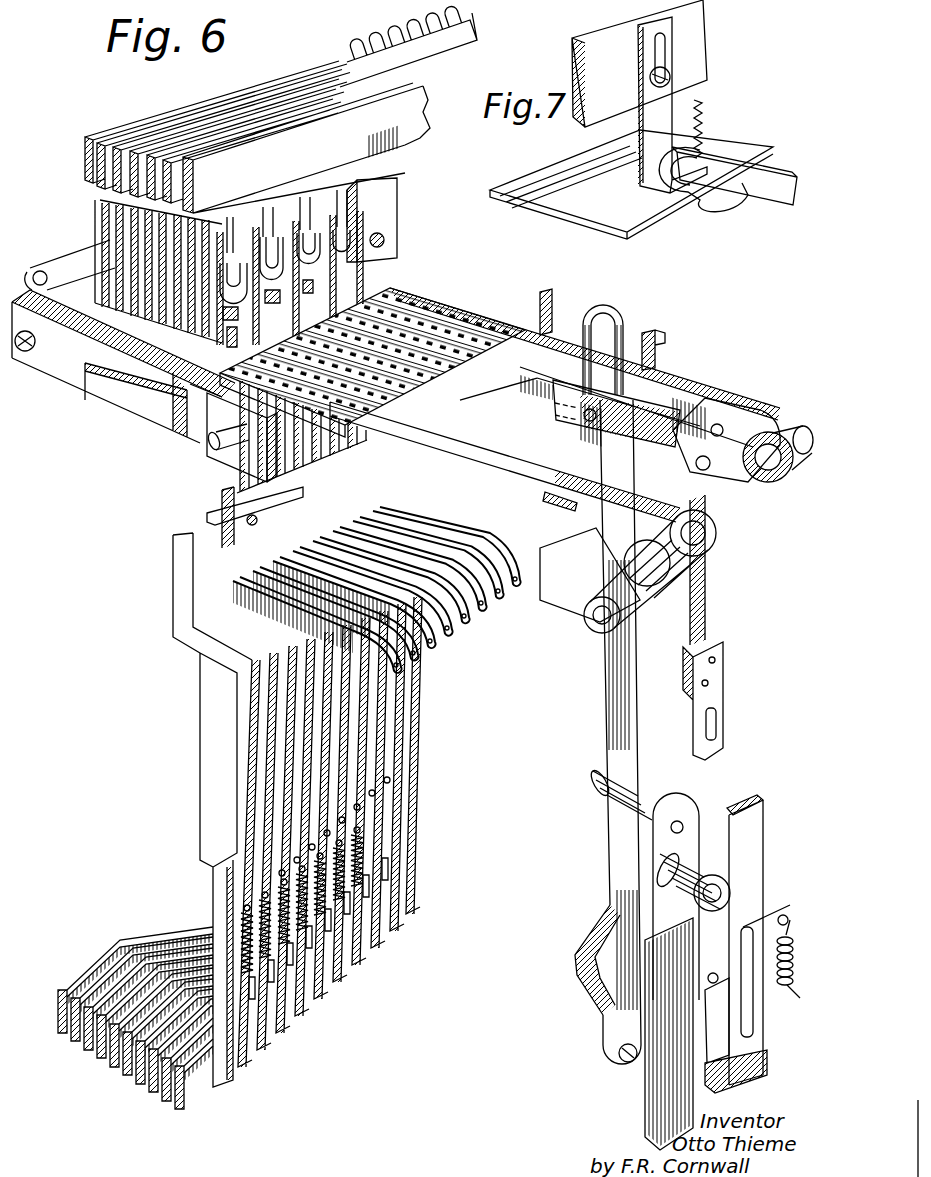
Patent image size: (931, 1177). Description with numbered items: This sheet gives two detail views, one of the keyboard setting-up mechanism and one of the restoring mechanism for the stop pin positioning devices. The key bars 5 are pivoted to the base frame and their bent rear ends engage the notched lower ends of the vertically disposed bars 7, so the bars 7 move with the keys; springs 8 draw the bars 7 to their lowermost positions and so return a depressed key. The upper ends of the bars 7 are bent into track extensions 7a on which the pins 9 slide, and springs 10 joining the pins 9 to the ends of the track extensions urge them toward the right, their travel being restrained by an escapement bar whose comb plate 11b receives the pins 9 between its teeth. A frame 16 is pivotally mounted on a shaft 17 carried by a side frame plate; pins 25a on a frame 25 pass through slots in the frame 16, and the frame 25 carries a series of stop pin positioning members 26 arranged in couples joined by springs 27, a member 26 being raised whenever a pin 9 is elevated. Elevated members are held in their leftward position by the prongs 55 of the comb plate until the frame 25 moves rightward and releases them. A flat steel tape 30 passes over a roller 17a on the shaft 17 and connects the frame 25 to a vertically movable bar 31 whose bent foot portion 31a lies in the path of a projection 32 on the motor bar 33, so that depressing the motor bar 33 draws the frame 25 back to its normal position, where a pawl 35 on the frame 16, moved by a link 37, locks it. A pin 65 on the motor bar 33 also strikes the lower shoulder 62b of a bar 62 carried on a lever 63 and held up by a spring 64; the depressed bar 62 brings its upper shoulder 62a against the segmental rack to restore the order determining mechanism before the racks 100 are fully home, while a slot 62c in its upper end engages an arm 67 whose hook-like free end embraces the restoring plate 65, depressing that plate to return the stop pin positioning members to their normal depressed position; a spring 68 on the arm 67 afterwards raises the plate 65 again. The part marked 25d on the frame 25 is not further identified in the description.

In FIG. 6, the key bars 5 is at (170, 1103).
In FIG. 6, the vertically disposed bars 7 is at (243, 797).
In FIG. 6, the track extensions 7a is at (443, 530).
In FIG. 6, the springs 8 is at (393, 827).
In FIG. 6, the pins 9 is at (207, 563).
In FIG. 6, the springs 10 is at (347, 670).
In FIG. 6, the comb plate 11b is at (215, 510).
In FIG. 6, the frame 16 is at (462, 308).
In FIG. 6, the shaft 17 is at (587, 633).
In FIG. 6, the roller 17a is at (670, 600).
In FIG. 6, the frame 25 is at (222, 408).
In FIG. 6, the pins 25a is at (212, 444).
In FIG. 6, the end block 25d is at (387, 277).
In FIG. 6, the stop pin positioning members 26 is at (395, 500).
In FIG. 6, the springs 27 is at (333, 487).
In FIG. 6, the flat steel tape 30 is at (522, 461).
In FIG. 6, the vertically movable bar 31 is at (713, 687).
In FIG. 6, the bent foot portion 31a is at (763, 1040).
In FIG. 6, the projection 32 is at (703, 860).
In FIG. 6, the motor bar 33 is at (673, 940).
In FIG. 6, the pawl 35 is at (680, 378).
In FIG. 6, the link 37 is at (550, 305).
In FIG. 6, the prongs 55 is at (206, 379).
In FIG. 6, the bar 62 is at (608, 703).
In FIG. 6, the shoulder 62a is at (567, 497).
In FIG. 6, the shoulder 62b is at (592, 937).
In FIG. 6, the slot 62c is at (605, 325).
In FIG. 6, the lever 63 is at (640, 1040).
In FIG. 6, the spring 64 is at (793, 977).
In FIG. 7, the restoring plate 65 is at (628, 212).
In FIG. 6, the restoring plate 65 is at (590, 800).
In FIG. 7, the arm 67 is at (768, 180).
In FIG. 6, the arm 67 is at (657, 453).
In FIG. 7, the spring 68 is at (701, 110).
In FIG. 6, the racks 100 is at (440, 50).